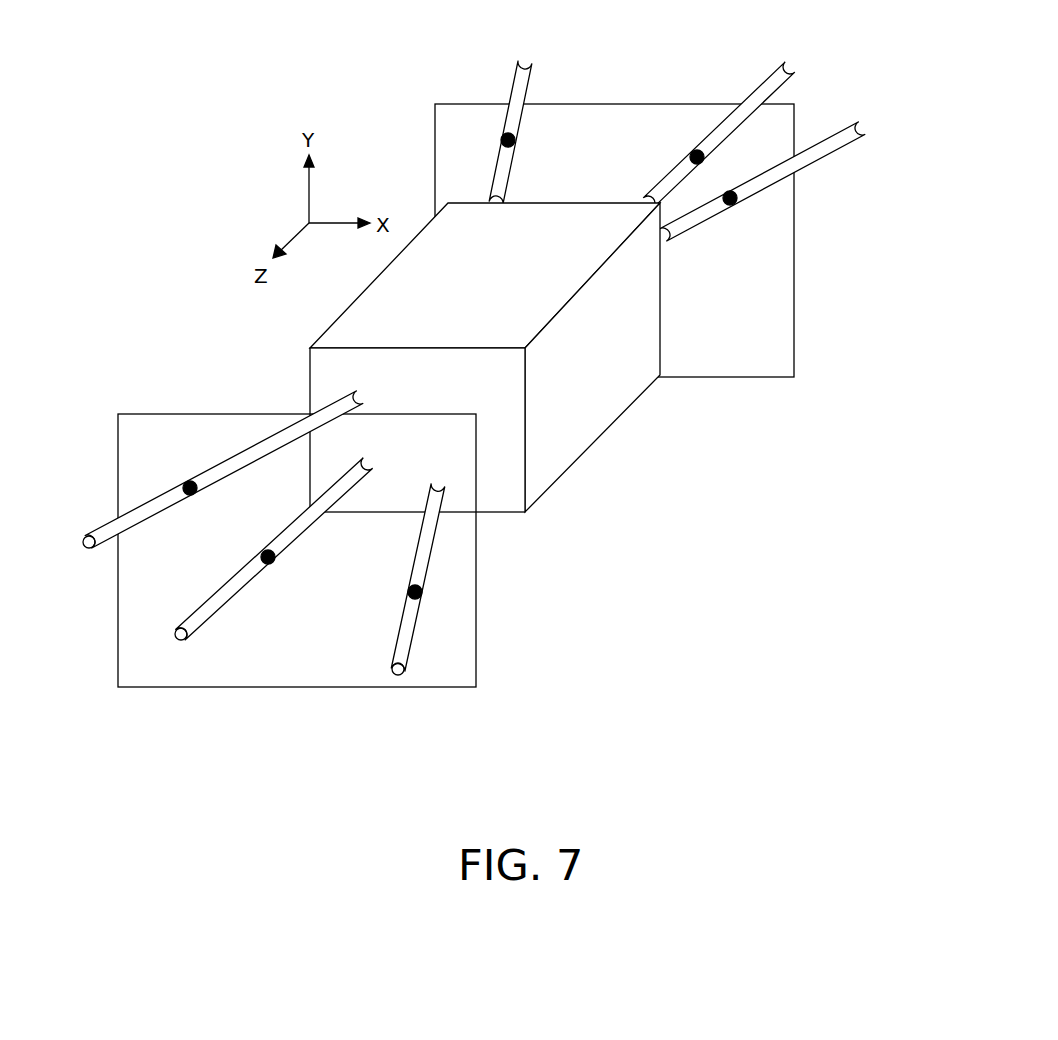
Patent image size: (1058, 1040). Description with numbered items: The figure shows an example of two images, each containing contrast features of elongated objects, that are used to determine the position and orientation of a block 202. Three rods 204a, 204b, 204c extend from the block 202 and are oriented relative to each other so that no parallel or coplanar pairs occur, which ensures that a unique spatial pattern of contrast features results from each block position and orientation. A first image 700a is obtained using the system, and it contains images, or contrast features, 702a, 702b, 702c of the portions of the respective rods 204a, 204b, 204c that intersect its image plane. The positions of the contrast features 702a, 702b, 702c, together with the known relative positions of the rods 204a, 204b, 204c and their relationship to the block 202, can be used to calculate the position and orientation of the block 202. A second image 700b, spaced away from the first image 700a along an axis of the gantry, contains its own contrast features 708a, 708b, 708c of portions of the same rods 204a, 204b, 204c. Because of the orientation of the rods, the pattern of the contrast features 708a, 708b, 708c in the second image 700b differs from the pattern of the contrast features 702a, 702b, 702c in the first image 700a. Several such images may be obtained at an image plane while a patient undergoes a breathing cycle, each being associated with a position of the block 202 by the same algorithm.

The block 202 is at (582, 437).
The rod 204a is at (217, 473).
The rod 204b is at (290, 538).
The rod 204c is at (423, 567).
The image 700a is at (476, 668).
The image 700b is at (573, 104).
The image (contrast feature) 702a is at (190, 494).
The image (contrast feature) 702b is at (268, 563).
The image (contrast feature) 702c is at (415, 598).
The image (contrast feature) 708a is at (737, 197).
The image (contrast feature) 708b is at (696, 152).
The image (contrast feature) 708c is at (505, 135).